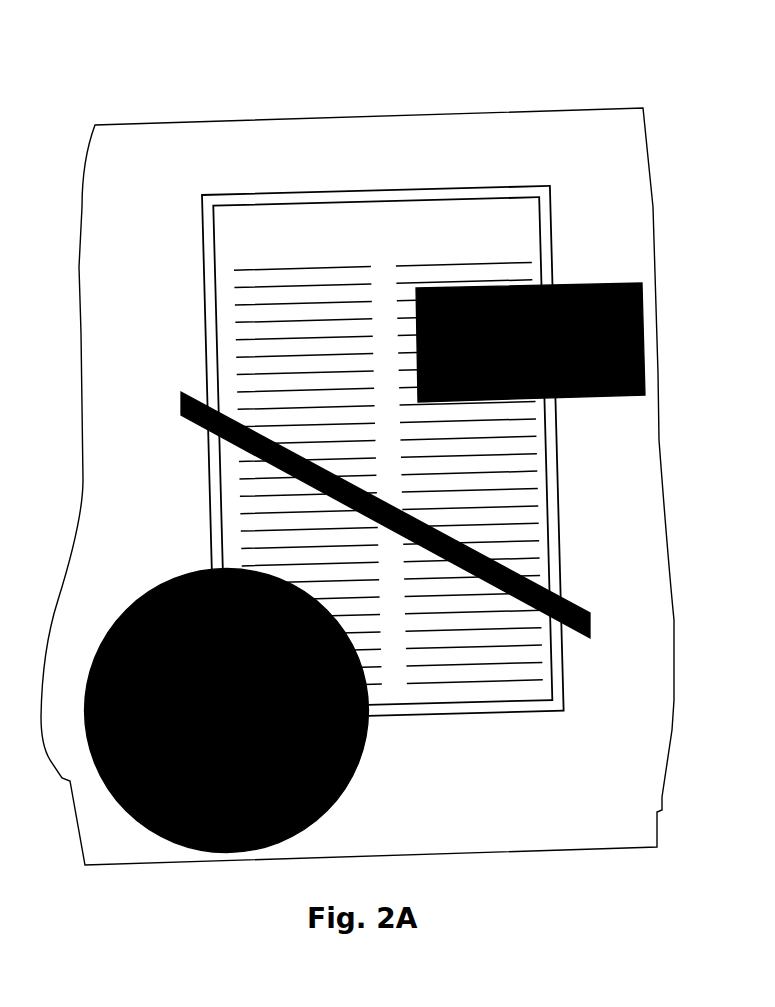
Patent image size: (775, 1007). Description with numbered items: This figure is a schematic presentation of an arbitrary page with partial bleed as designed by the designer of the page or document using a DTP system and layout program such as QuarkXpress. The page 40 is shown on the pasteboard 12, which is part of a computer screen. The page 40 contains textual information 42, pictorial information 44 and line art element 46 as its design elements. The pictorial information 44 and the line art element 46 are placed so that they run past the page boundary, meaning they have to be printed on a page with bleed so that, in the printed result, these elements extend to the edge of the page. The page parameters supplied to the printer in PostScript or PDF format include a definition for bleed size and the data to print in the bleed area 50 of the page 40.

The pasteboard 12 is at (630, 165).
The page 40 is at (452, 172).
The textual information 42 is at (245, 343).
The pictorial information 44 is at (644, 325).
The line art element 46 is at (592, 612).
The bleed area 50 is at (210, 262).